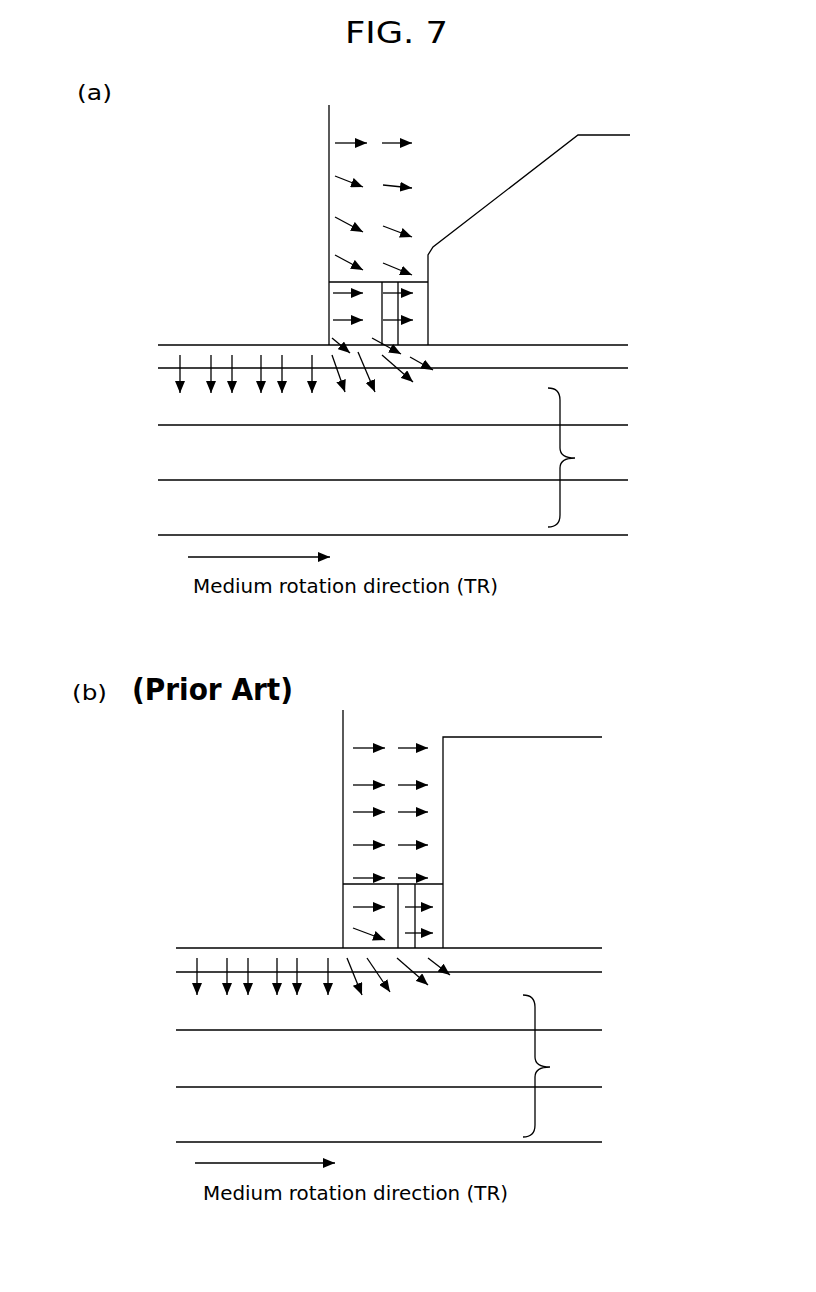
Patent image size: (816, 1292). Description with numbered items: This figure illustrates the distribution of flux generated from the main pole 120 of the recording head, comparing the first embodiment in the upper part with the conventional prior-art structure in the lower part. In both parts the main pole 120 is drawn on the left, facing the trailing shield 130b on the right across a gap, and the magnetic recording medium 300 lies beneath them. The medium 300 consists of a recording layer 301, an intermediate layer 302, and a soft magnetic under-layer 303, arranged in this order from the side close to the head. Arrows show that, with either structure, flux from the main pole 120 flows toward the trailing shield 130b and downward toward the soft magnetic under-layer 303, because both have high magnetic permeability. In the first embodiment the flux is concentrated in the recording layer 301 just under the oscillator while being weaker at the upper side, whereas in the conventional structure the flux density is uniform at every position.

The main pole 120 is at (336, 526).
The trailing shield 130b is at (529, 541).
The magnetic recording medium 300 is at (574, 762).
The recording layer 301 is at (393, 712).
The intermediate layer 302 is at (393, 767).
The soft magnetic under-layer 303 is at (393, 822).